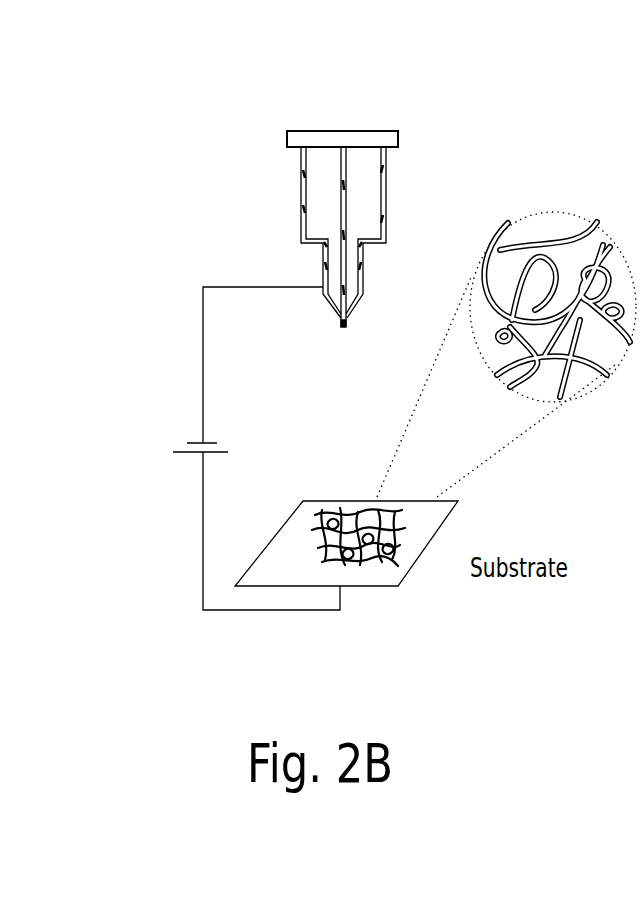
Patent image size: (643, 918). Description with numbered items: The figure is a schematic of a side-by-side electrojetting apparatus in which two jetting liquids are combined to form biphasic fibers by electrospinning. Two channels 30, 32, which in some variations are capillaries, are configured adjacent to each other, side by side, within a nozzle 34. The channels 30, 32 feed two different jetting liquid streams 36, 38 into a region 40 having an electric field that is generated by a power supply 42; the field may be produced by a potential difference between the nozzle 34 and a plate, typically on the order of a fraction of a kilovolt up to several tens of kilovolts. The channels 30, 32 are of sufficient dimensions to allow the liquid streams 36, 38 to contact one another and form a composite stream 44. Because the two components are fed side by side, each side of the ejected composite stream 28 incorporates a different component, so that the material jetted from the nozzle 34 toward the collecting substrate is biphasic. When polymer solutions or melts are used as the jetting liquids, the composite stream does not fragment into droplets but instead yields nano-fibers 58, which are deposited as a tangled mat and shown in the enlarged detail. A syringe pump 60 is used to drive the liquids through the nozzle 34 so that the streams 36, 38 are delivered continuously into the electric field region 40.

The composite stream 28 is at (284, 369).
The channel 30 is at (303, 175).
The channel 32 is at (387, 175).
The nozzle 34 is at (267, 224).
The jetting liquid stream 36 is at (327, 208).
The jetting liquid stream 38 is at (365, 200).
The region 40 is at (295, 459).
The power supply 42 is at (172, 451).
The composite stream 44 is at (405, 573).
The fibers 58 is at (342, 138).
The syringe pump 60 is at (547, 240).